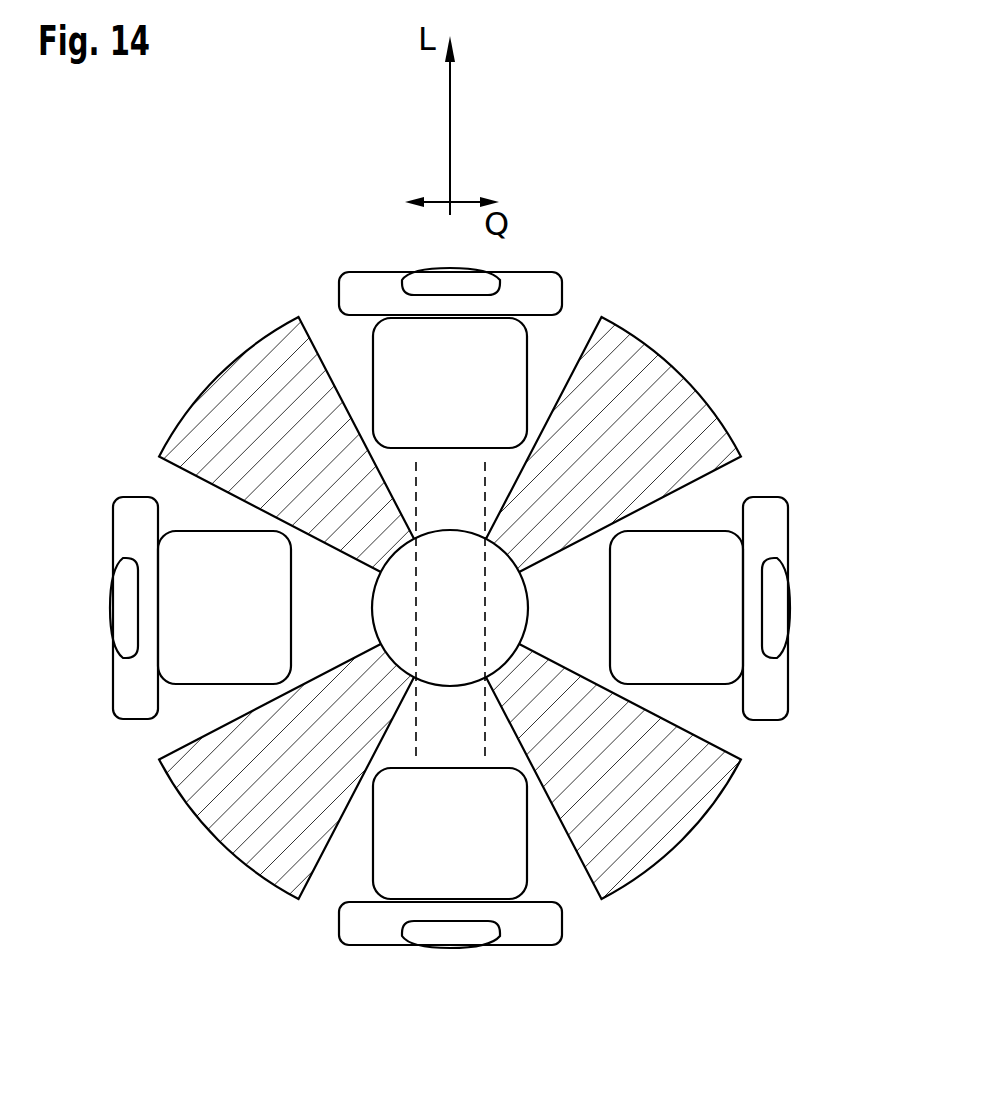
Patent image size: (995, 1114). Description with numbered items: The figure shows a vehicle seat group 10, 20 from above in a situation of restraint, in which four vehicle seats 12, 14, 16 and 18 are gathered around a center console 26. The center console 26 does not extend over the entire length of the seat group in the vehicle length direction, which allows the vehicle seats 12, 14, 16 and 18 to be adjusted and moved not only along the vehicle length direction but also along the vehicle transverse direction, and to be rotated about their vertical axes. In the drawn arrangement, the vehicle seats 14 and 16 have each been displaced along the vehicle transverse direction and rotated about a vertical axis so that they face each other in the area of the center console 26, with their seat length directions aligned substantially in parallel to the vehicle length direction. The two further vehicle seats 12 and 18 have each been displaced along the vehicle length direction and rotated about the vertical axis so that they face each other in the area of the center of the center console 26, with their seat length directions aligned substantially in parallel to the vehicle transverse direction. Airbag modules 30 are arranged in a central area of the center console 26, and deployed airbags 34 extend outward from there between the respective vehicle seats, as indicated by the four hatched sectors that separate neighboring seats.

The vehicle seat group 10 is at (664, 154).
The energy absorbing structure 20 is at (664, 154).
The vehicle seat 12 is at (775, 528).
The vehicle seat 14 is at (527, 296).
The vehicle seat 16 is at (531, 930).
The vehicle seat 18 is at (131, 527).
The center console 26 is at (443, 488).
The airbag module 30 is at (403, 560).
The airbag 34 is at (245, 390).